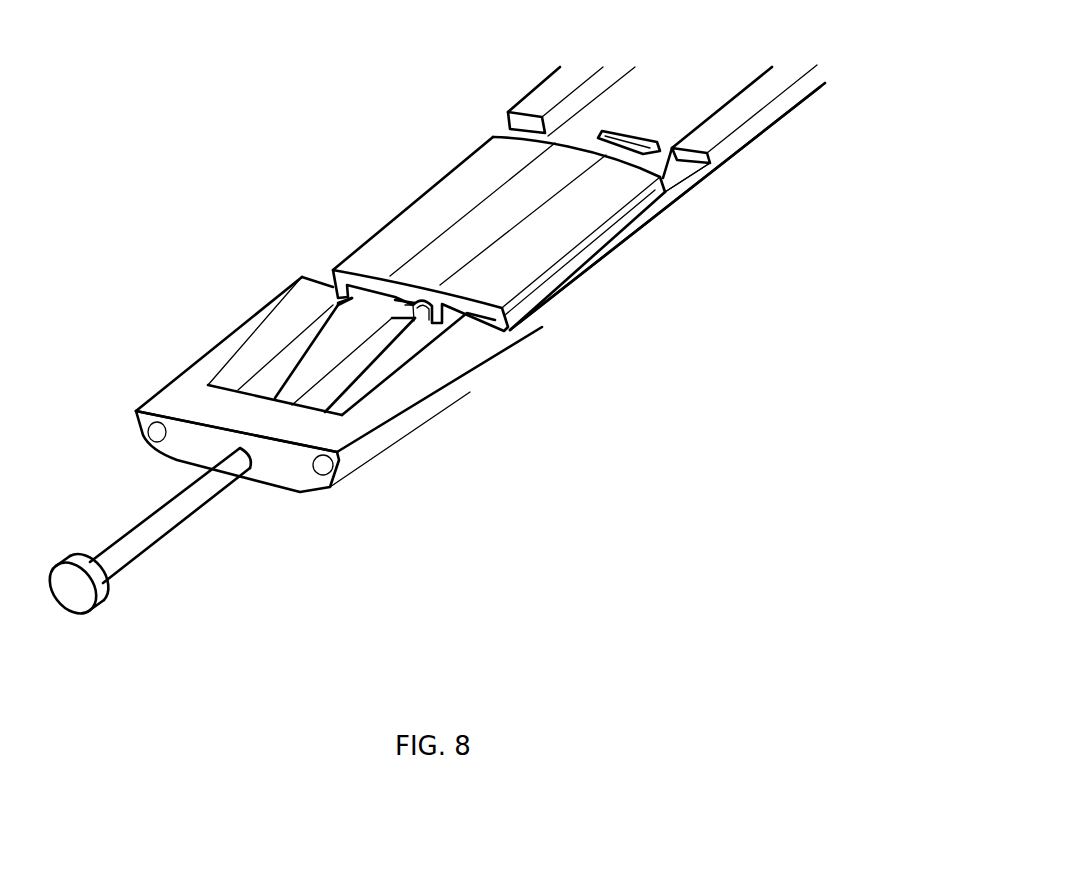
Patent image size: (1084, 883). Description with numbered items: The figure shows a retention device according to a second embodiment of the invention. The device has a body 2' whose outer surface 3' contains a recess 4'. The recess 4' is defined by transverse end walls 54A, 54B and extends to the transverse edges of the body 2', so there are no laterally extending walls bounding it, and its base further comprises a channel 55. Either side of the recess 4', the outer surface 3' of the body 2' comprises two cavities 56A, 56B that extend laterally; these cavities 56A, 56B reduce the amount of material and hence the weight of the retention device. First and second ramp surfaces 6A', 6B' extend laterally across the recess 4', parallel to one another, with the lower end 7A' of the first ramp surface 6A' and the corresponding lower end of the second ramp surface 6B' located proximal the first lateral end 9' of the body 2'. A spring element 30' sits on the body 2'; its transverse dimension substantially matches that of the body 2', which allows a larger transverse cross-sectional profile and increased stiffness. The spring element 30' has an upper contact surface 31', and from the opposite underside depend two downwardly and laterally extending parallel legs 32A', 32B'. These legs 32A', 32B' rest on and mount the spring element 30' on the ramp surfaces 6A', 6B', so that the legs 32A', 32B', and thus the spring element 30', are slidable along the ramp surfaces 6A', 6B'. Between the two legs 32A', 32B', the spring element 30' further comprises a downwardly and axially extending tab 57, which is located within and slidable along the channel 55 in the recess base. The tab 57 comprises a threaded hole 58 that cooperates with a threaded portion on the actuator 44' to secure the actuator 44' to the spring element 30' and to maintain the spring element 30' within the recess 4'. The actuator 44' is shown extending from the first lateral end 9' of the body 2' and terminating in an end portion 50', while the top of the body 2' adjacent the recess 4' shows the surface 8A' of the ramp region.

The body 2' is at (339, 382).
The outer surface 3' is at (570, 90).
The recess 4' is at (667, 223).
The first ramp surface 6A' is at (670, 204).
The second ramp surface 6B' is at (487, 113).
The lower end 7A' is at (451, 357).
The top surface of second rail 8A' is at (698, 203).
The first lateral end 9' is at (237, 473).
The spring element 30' is at (499, 234).
The contact surface 31' is at (470, 214).
The first leg 32A' is at (580, 281).
The second leg 32B' is at (394, 396).
The actuator 44' is at (170, 515).
The end cap 50' is at (102, 605).
The transverse end wall 54A is at (315, 280).
The transverse end wall 54B is at (713, 168).
The channel 55 is at (826, 454).
The cavity 56A is at (305, 348).
The cavity 56B is at (687, 100).
The tab 57 is at (438, 313).
The threaded hole 58 is at (422, 323).